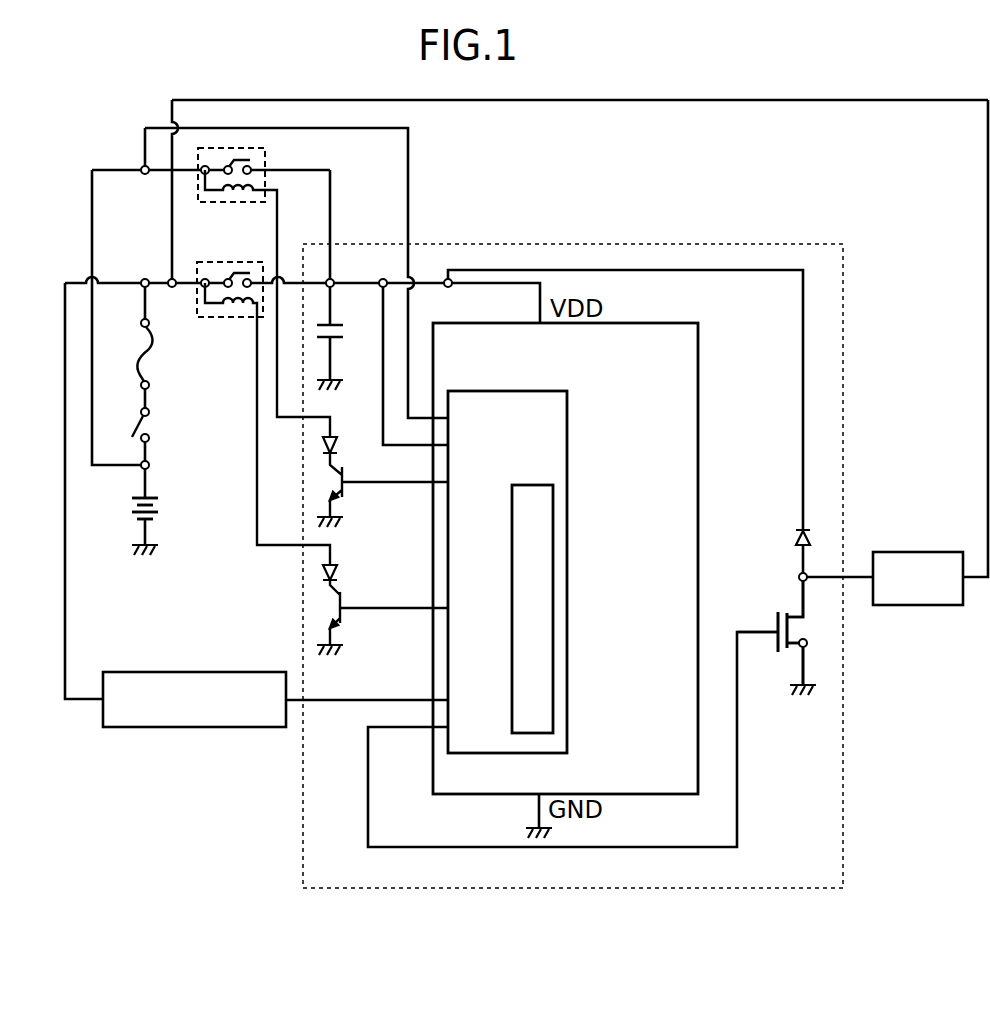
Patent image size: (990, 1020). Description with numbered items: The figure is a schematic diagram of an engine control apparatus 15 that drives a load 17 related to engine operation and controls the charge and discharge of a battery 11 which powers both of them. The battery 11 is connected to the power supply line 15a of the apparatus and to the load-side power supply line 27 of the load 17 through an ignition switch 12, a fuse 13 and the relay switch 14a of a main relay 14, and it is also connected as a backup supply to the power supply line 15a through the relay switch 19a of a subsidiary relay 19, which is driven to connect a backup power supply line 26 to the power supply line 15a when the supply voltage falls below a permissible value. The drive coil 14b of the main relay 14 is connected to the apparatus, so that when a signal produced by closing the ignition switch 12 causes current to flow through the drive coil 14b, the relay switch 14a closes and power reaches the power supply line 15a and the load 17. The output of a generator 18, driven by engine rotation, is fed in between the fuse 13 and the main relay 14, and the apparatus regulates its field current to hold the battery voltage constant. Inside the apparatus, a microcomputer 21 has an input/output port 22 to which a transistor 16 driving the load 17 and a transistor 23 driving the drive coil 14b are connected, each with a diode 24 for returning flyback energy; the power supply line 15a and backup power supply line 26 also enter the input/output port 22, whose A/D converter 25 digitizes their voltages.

The battery 11 is at (152, 506).
The ignition switch 12 is at (150, 425).
The fuse 13 is at (160, 360).
The main relay 14 is at (253, 383).
The relay switch 14a is at (237, 272).
The drive coil 14b is at (238, 312).
The engine control apparatus 15 is at (925, 771).
The power supply line 15a is at (332, 280).
The transistor 16 is at (810, 643).
The load 17 is at (897, 552).
The generator 18 is at (167, 672).
The subsidiary relay 19 is at (245, 249).
The relay switch 19a is at (237, 153).
The microcomputer 21 is at (604, 583).
The input/output port 22 is at (488, 755).
The transistor 23 is at (325, 608).
The diodes 24 is at (327, 563).
The A/D converter 25 is at (556, 623).
The backup power supply line 26 is at (120, 170).
The load-side power supply line 27 is at (508, 100).